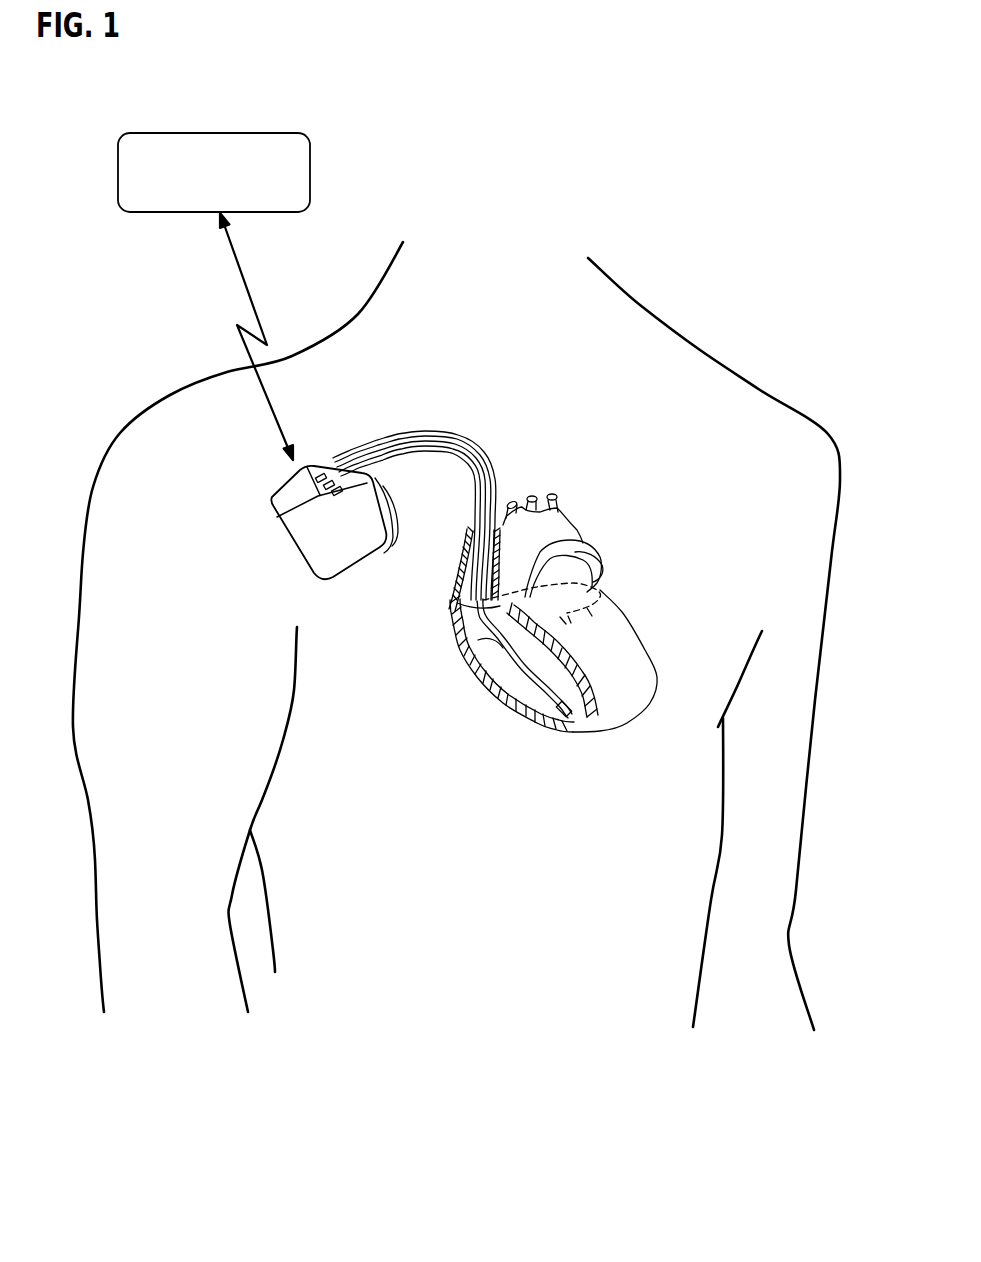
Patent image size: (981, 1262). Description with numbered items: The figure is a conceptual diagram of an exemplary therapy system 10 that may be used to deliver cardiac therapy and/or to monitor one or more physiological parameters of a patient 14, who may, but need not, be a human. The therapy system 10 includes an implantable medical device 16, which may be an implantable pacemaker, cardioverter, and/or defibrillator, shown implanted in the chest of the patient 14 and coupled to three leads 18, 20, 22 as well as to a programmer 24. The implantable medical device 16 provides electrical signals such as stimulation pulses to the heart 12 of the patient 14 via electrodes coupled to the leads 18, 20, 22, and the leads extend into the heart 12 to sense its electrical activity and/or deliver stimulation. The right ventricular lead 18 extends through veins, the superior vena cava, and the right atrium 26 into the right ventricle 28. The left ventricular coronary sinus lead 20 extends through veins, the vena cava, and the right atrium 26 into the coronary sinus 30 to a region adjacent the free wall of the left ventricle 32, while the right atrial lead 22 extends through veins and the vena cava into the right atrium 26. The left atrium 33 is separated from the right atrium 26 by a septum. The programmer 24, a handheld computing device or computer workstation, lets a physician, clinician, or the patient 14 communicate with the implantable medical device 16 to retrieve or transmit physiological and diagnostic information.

The therapy system 10 is at (658, 138).
The heart 12 is at (538, 647).
The patient 14 is at (695, 355).
The implantable medical device 16 is at (278, 545).
The right ventricular lead 18 is at (452, 456).
The left ventricular coronary sinus lead 20 is at (492, 470).
The right atrial lead 22 is at (470, 490).
The programmer 24 is at (227, 194).
The right atrium 26 is at (462, 628).
The right ventricle 28 is at (503, 688).
The coronary sinus 30 is at (518, 594).
The left ventricle 32 is at (620, 642).
The left atrium 33 is at (555, 540).